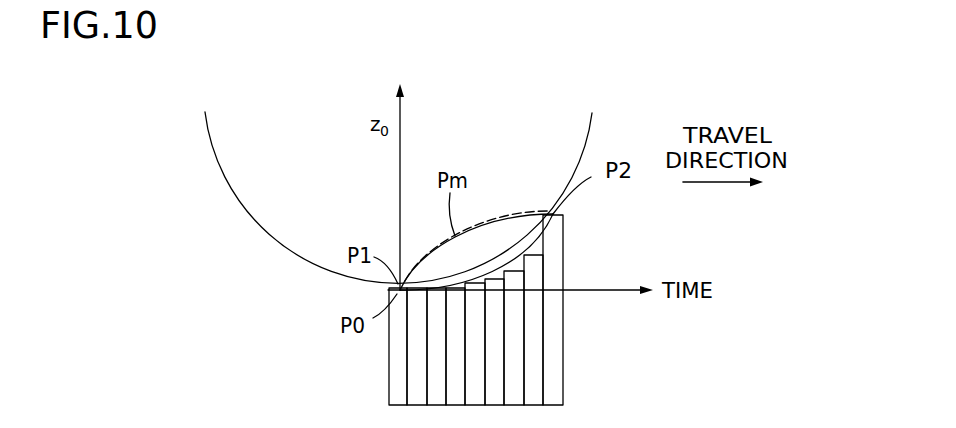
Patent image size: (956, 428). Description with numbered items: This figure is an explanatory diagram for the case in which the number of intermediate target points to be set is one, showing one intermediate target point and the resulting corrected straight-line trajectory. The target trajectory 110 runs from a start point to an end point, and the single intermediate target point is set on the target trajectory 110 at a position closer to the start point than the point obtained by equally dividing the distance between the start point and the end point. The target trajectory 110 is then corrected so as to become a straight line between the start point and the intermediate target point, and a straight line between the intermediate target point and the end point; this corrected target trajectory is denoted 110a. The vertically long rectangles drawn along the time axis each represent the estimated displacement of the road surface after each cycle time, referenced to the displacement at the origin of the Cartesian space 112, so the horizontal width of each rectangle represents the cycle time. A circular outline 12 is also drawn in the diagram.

The workpiece (circular object) 12 is at (245, 211).
The target trajectory 110 is at (515, 208).
The corrected target trajectory 110a is at (422, 257).
The Cartesian space 112 is at (608, 308).